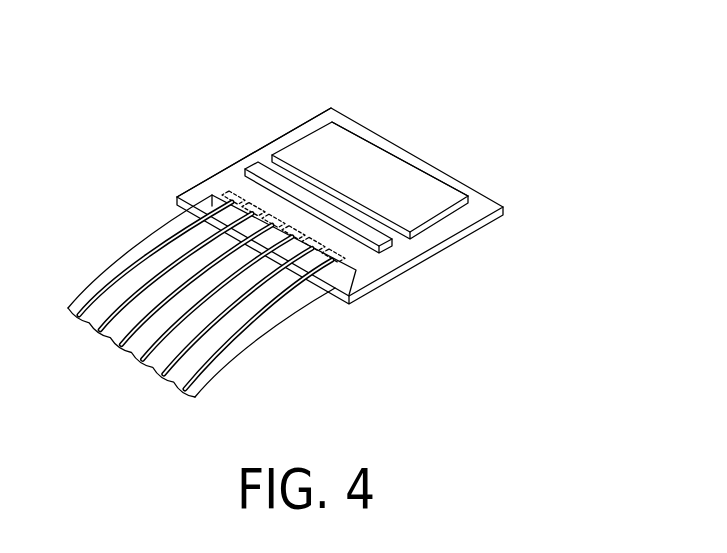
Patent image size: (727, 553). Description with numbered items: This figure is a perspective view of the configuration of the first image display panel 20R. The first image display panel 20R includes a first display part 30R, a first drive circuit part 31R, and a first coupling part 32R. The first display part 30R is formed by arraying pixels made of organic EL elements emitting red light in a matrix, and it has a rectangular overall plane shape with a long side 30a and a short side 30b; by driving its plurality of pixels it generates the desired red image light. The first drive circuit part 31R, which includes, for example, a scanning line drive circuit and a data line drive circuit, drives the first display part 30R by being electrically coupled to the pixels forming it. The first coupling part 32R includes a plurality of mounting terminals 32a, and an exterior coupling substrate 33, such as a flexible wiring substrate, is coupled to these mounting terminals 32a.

The first image display panel 20R is at (467, 188).
The first display part 30R is at (373, 168).
The long side 30a is at (345, 136).
The short side 30b is at (280, 138).
The first drive circuit part 31R is at (396, 242).
The first coupling part 32R is at (224, 190).
The mounting terminals 32a is at (363, 268).
The exterior coupling substrate 33 is at (226, 353).